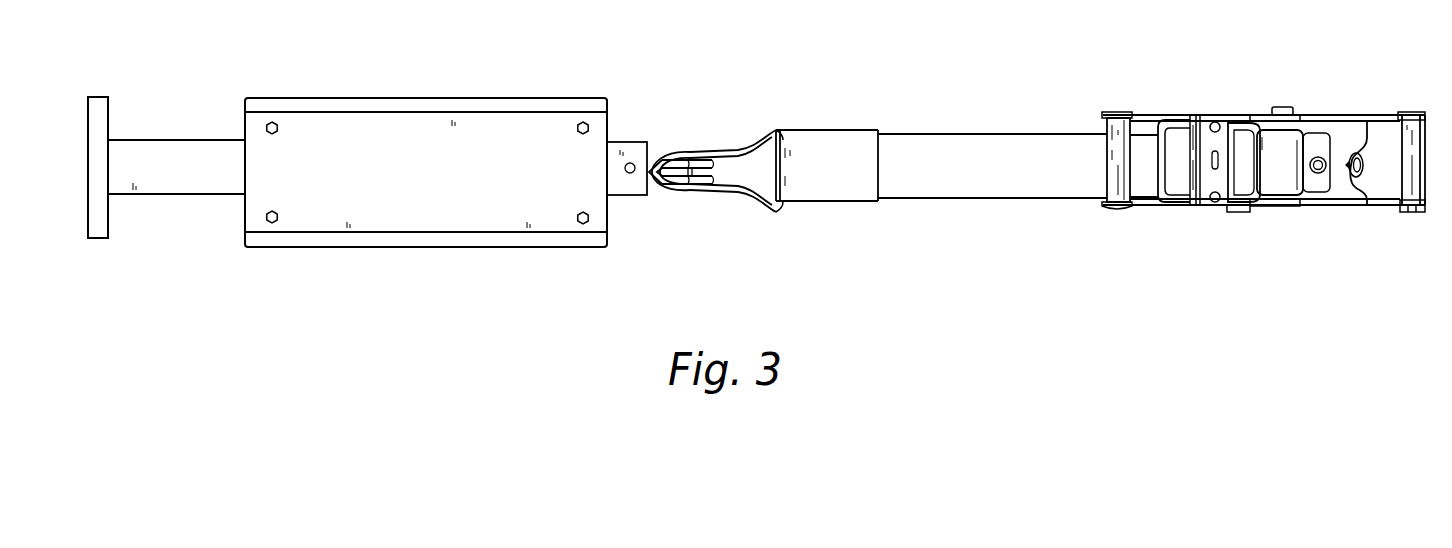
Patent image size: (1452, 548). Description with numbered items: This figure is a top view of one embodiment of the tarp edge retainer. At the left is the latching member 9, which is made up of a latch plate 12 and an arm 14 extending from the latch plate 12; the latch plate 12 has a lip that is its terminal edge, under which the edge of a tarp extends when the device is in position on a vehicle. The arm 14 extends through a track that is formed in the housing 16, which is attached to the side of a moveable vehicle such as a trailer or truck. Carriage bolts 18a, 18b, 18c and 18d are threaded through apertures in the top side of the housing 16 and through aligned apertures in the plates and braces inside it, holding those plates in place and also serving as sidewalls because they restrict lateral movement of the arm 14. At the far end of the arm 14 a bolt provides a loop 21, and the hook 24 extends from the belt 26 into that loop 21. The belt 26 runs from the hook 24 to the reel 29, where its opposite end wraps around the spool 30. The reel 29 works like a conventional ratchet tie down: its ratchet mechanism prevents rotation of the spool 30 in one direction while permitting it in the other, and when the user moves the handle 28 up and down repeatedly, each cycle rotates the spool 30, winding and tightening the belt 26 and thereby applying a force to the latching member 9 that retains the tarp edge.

The latching member 9 is at (166, 184).
The latch plate 12 is at (102, 119).
The arm 14 is at (168, 168).
The housing 16 is at (467, 237).
The carriage bolt 18a is at (273, 121).
The carriage bolt 18b is at (273, 224).
The carriage bolt 18c is at (584, 225).
The carriage bolt 18d is at (584, 121).
The loop 21 is at (670, 195).
The hook 24 is at (738, 147).
The belt 26 is at (952, 152).
The handle 28 is at (1113, 137).
The reel 29 is at (1263, 161).
The spool 30 is at (1280, 158).